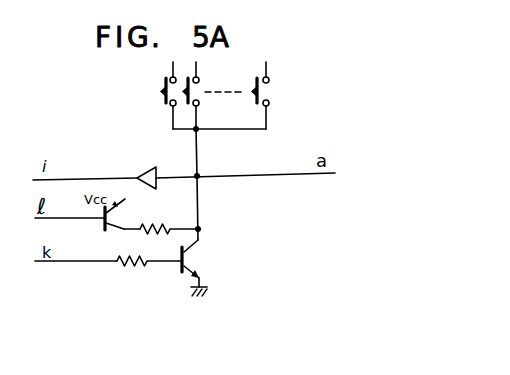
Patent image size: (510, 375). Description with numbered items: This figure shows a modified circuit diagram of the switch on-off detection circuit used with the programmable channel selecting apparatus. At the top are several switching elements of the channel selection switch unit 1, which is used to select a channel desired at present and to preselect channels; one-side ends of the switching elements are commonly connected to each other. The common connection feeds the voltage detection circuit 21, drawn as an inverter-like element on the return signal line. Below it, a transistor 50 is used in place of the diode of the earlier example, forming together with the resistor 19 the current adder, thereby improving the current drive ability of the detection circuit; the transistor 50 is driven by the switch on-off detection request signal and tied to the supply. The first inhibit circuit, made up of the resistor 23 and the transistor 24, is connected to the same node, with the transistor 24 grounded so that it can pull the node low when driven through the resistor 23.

The channel selection switch unit 1 is at (270, 91).
The voltage detection circuit 21 is at (151, 167).
The transistor 50 is at (127, 216).
The resistor 19 is at (172, 224).
The resistor 23 is at (134, 261).
The transistor 24 is at (200, 258).